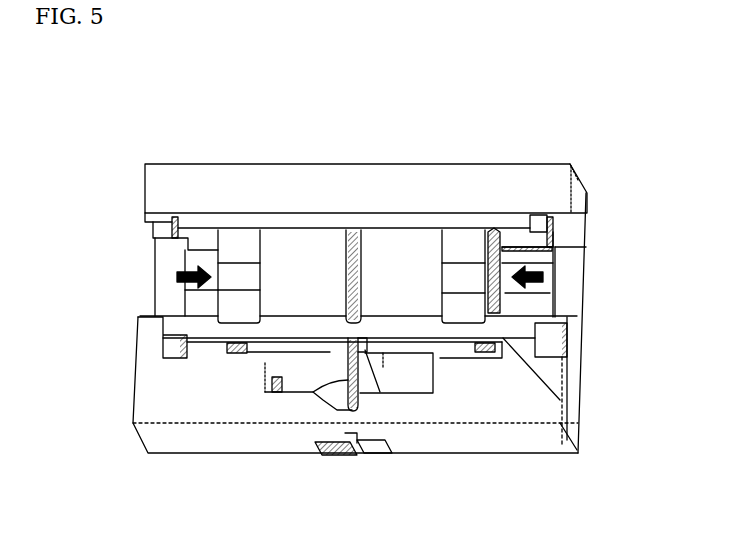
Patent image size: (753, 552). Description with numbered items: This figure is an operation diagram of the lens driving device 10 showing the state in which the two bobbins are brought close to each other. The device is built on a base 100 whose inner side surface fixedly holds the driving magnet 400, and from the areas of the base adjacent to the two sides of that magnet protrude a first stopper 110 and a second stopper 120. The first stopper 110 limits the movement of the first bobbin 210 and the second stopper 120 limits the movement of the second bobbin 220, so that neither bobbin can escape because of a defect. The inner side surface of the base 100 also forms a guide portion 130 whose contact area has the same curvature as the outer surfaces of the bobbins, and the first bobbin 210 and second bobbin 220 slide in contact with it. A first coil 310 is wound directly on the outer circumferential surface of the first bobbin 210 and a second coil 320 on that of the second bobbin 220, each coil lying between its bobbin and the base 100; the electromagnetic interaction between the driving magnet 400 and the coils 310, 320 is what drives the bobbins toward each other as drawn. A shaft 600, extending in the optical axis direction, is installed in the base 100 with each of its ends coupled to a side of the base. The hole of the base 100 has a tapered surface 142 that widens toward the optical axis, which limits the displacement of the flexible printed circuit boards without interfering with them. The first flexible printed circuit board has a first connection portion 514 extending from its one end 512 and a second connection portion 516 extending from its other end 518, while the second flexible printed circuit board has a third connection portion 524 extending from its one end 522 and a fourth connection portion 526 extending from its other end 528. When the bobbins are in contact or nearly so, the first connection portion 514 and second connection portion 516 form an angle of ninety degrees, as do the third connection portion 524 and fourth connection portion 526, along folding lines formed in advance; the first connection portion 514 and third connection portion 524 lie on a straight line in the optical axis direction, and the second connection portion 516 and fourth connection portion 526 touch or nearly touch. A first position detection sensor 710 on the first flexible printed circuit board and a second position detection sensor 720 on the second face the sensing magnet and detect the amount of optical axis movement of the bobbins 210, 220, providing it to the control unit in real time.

The lens driving device 10 is at (118, 72).
The base 100 is at (197, 192).
The first stopper 110 is at (170, 222).
The second stopper 120 is at (557, 227).
The driving magnet 400 is at (517, 227).
The second bobbin 220 is at (553, 248).
The guide portion 130 is at (543, 263).
The first coil 310 is at (290, 262).
The first bobbin 210 is at (208, 278).
The second coil 320 is at (487, 290).
The first position detection sensor 710 is at (283, 347).
The one end of the first flexible printed circuit board 512 is at (225, 343).
The first connection portion 514 is at (272, 377).
The second connection portion 516 is at (283, 392).
The tapered surface 142 is at (350, 380).
The fourth connection portion 526 is at (378, 392).
The third connection portion 524 is at (417, 347).
The one end of the second flexible printed circuit board 522 is at (498, 345).
The shaft 600 is at (510, 325).
The second position detection sensor 720 is at (560, 400).
The other end of the first flexible printed circuit board 518 is at (330, 450).
The other end of the second flexible printed circuit board 528 is at (373, 455).